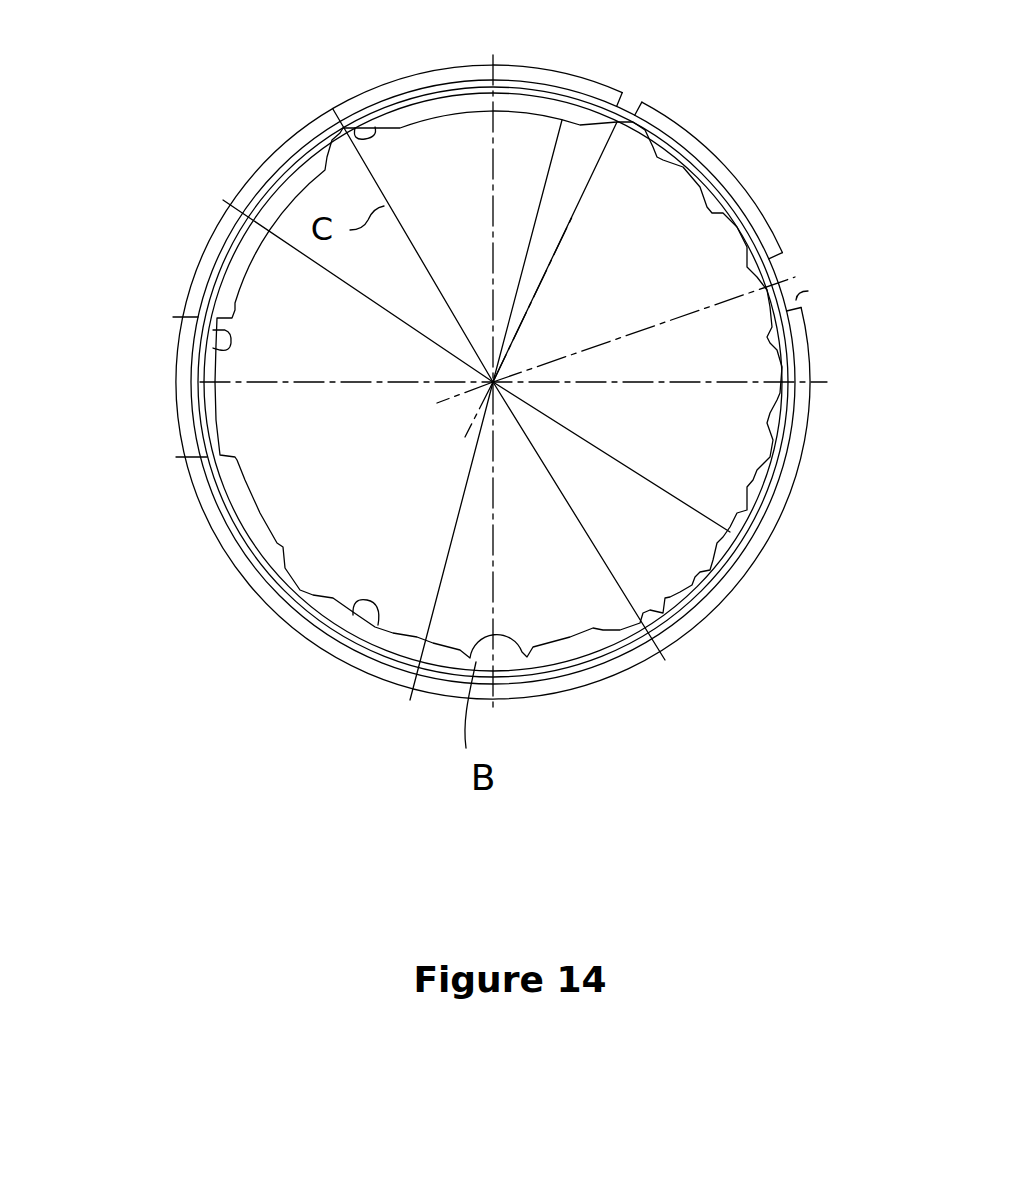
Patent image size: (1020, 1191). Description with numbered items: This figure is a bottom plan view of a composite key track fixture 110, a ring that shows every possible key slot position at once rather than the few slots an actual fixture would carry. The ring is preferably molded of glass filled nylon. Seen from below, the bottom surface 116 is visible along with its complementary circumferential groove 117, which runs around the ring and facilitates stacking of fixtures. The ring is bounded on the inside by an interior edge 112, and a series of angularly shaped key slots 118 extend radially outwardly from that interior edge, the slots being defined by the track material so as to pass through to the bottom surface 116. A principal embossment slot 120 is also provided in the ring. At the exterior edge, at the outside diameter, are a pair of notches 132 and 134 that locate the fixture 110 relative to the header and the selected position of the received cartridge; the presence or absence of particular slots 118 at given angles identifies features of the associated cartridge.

The key track fixture 110 is at (220, 118).
The interior edge 112 is at (373, 614).
The bottom surface 116 is at (208, 514).
The circumferential groove 117 is at (193, 398).
The key slots 118 is at (376, 128).
The principal embossment slot 120 is at (220, 348).
The notch 132 is at (808, 291).
The notch 134 is at (632, 108).